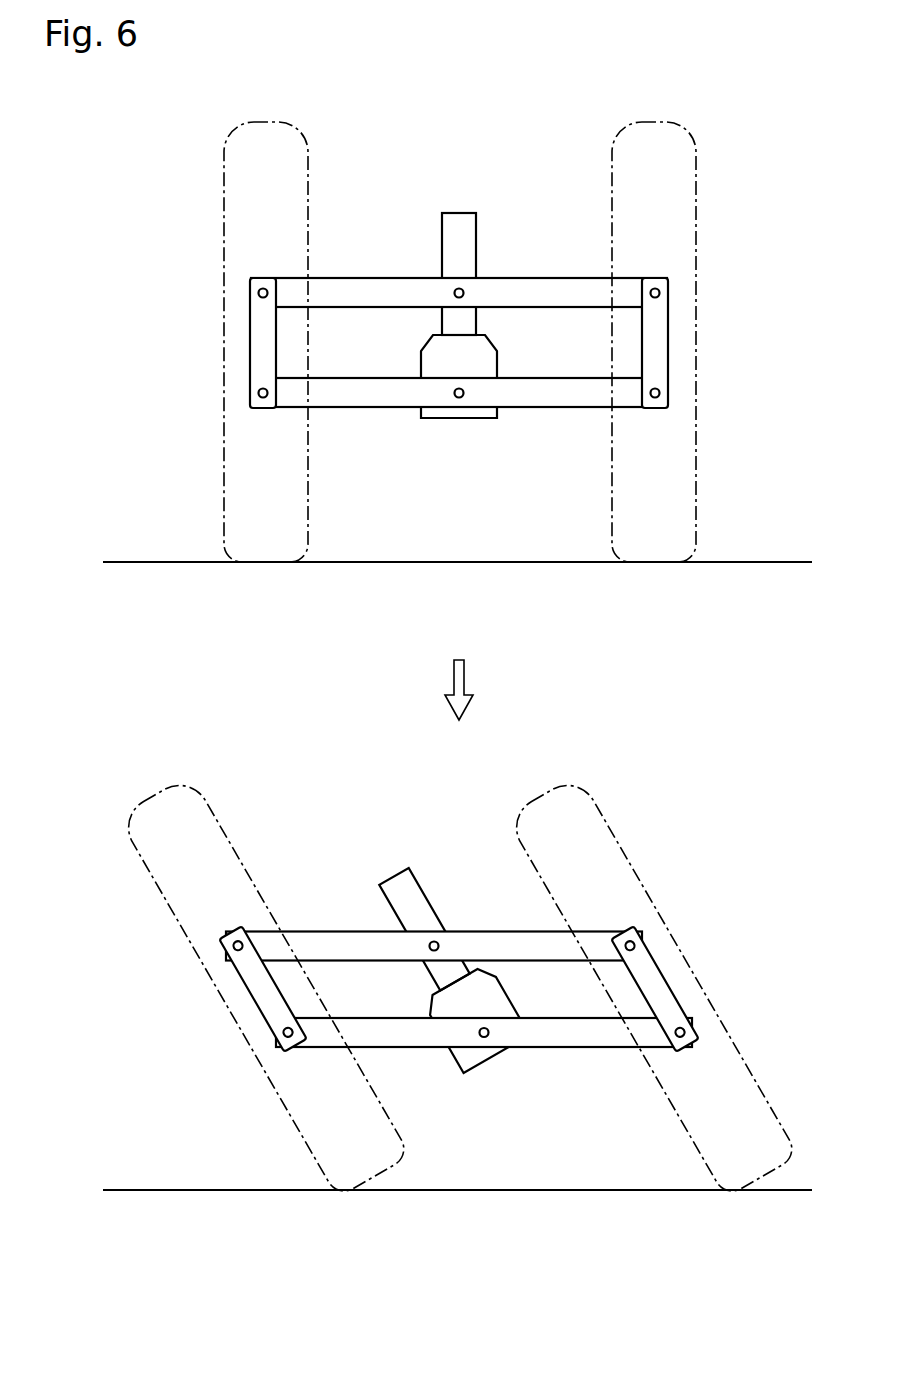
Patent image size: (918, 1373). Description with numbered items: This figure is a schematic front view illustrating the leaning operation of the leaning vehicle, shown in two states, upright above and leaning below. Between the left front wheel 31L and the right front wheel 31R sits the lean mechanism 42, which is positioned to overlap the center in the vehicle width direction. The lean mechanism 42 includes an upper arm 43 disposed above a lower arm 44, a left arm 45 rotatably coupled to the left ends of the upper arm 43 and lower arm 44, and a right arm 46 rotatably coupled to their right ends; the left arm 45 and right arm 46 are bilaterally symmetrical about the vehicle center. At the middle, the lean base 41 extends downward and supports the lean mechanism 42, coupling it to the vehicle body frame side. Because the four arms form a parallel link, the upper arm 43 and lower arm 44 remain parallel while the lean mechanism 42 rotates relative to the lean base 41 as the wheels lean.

The right front wheel 31R is at (223, 180).
The left front wheel 31L is at (696, 180).
The lean base 41 is at (430, 330).
The lean mechanism 42 is at (465, 618).
The upper arm 43 is at (533, 287).
The lower arm 44 is at (529, 400).
The left arm 45 is at (657, 345).
The right arm 46 is at (263, 345).